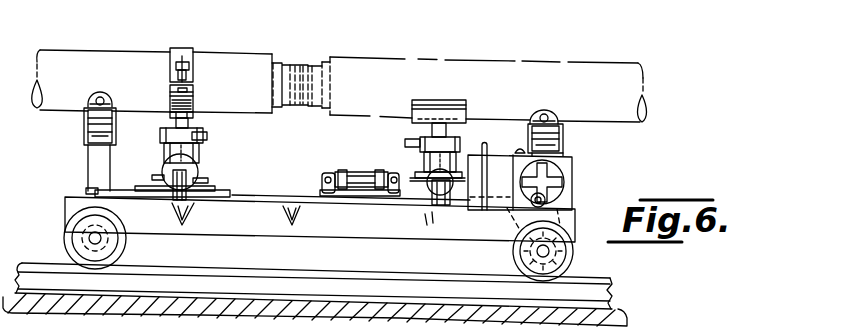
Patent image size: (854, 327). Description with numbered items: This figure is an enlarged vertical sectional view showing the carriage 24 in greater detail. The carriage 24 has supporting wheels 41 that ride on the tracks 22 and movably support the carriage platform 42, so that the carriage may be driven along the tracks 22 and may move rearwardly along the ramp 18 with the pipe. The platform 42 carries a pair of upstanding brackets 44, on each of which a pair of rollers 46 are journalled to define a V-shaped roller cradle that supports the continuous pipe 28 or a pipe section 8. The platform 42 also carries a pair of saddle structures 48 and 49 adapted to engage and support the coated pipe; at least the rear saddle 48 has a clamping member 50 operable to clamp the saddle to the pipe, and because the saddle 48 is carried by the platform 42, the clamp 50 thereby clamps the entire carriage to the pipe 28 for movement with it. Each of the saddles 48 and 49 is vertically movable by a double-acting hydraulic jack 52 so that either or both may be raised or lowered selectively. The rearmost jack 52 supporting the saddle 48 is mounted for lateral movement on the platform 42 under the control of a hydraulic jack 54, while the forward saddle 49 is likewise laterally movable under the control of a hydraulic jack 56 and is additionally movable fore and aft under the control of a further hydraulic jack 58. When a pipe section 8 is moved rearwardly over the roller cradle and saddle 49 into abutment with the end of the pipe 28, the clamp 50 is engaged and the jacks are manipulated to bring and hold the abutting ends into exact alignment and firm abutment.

The pipe section 8 is at (443, 68).
The ramp 18 is at (621, 312).
The tracks 22 is at (363, 279).
The carriage 24 is at (581, 175).
The continuous pipe 28 is at (118, 60).
The supporting wheels 41 is at (63, 247).
The carriage platform 42 is at (261, 208).
The upstanding brackets 44 is at (93, 176).
The rollers 46 is at (72, 133).
The saddle 48 is at (194, 104).
The saddle 49 is at (448, 110).
The clamping member 50 is at (183, 48).
The double-acting hydraulic jack 52 is at (187, 150).
The hydraulic jack 54 is at (190, 167).
The hydraulic jack 56 is at (456, 198).
The hydraulic jack 58 is at (360, 163).